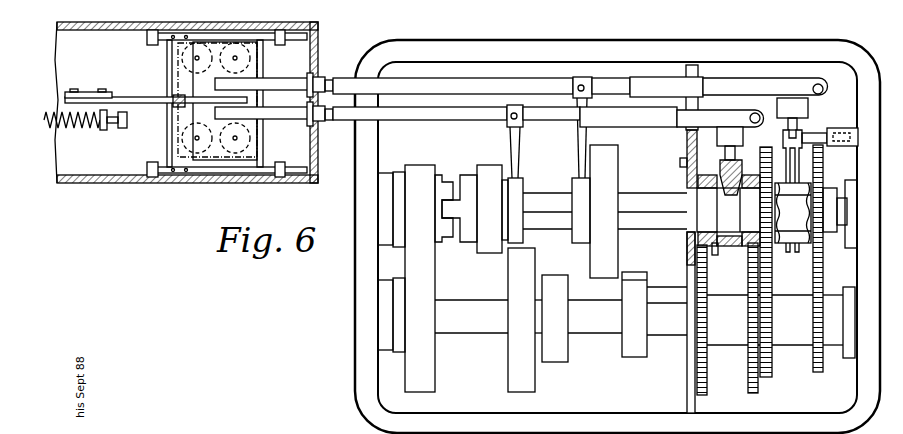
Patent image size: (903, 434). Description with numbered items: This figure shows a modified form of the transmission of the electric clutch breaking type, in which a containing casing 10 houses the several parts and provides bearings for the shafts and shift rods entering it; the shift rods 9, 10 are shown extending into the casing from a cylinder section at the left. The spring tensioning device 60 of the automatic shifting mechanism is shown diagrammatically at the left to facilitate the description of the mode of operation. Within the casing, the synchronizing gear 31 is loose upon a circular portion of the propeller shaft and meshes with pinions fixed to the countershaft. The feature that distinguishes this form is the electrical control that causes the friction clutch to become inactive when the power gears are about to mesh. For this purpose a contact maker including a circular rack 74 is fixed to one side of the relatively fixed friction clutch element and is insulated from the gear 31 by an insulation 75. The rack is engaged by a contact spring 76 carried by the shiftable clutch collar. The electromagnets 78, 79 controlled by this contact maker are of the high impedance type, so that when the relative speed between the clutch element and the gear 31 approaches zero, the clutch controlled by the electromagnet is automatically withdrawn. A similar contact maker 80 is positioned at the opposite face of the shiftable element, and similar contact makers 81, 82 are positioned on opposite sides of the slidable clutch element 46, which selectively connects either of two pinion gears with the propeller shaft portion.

The upper control rod 9 is at (341, 77).
The containing casing 10 is at (349, 123).
The spring tensioning device 60 is at (78, 128).
The circular rack 74 is at (687, 170).
The electromagnet 78 is at (730, 161).
The electromagnet 79 is at (792, 114).
The contact spring 76 is at (778, 190).
The gear 31 is at (689, 257).
The insulation 75 is at (710, 252).
The contact maker 80 is at (752, 250).
The contact maker 81 is at (797, 258).
The slidable clutch element 46 is at (782, 245).
The contact maker 82 is at (811, 248).